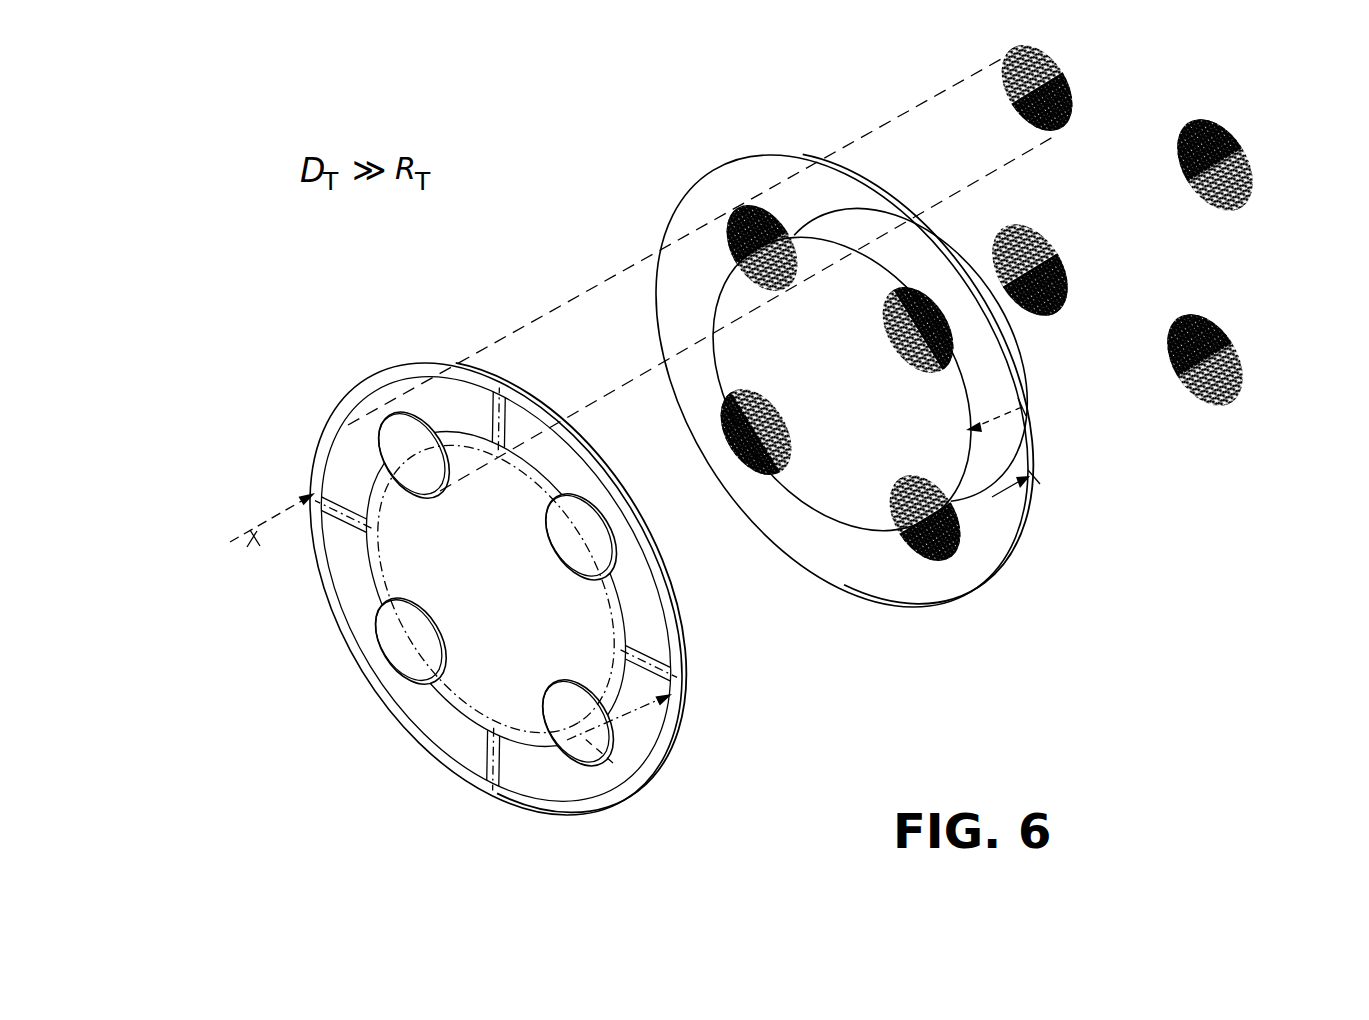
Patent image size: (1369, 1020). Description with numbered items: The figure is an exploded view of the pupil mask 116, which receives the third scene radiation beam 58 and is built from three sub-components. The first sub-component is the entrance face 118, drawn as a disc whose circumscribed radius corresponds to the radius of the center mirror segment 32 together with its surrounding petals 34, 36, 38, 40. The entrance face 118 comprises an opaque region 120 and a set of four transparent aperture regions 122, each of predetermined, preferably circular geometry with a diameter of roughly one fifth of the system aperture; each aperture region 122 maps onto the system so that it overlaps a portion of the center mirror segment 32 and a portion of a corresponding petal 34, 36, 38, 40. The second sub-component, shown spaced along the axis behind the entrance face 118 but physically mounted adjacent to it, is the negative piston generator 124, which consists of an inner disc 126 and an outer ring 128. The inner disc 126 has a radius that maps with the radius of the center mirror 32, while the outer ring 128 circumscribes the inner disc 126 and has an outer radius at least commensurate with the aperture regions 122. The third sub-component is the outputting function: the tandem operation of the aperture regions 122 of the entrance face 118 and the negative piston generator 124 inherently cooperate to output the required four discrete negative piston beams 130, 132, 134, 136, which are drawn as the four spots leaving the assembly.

The center mirror segment 32 is at (512, 616).
The petal 34 is at (340, 463).
The petal 36 is at (528, 488).
The petal 38 is at (538, 782).
The petal 40 is at (420, 705).
The third scene radiation beam 58 is at (230, 542).
The pupil mask 116 is at (541, 230).
The entrance face 118 is at (322, 580).
The opaque region 120 is at (345, 415).
The aperture regions 122 is at (425, 492).
The negative piston generator 124 is at (876, 634).
The inner disc 126 is at (842, 388).
The outer ring 128 is at (757, 178).
The negative piston beam 130 is at (1072, 90).
The negative piston beam 132 is at (1045, 255).
The negative piston beam 134 is at (1253, 150).
The negative piston beam 136 is at (1238, 352).